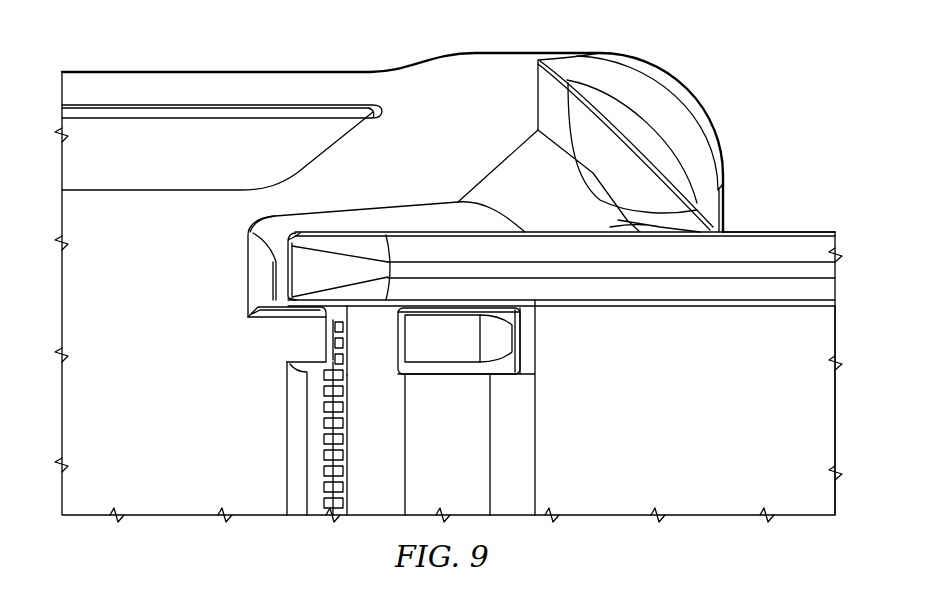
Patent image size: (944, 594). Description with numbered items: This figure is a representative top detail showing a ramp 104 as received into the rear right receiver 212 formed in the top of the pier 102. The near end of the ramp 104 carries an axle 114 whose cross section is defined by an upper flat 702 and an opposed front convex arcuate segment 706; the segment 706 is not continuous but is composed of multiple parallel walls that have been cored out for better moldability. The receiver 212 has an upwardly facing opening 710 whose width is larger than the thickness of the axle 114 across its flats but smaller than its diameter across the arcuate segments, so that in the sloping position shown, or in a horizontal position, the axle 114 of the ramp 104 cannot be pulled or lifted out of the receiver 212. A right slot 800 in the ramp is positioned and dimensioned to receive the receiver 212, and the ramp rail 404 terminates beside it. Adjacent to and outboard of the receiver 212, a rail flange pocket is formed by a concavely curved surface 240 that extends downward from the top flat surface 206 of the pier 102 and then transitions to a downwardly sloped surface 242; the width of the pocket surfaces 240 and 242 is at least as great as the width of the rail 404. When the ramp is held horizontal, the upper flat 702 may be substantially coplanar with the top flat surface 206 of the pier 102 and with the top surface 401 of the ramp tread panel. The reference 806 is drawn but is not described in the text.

The pier 102 is at (246, 60).
The ramp 104 is at (775, 212).
The downwardly sloped surface 242 is at (400, 218).
The bracket 806 is at (324, 270).
The rail 404 is at (723, 272).
The concavely curved surface 240 is at (262, 283).
The rear right axle receiver 212 is at (312, 337).
The top flat surface 206 is at (176, 413).
The convex arcuate segment 706 is at (324, 418).
The opening 710 is at (392, 354).
The upper flat 702 is at (358, 465).
The axle 114 is at (398, 425).
The right slot 800 is at (527, 343).
The top surface of ramp tread panel 401 is at (666, 413).